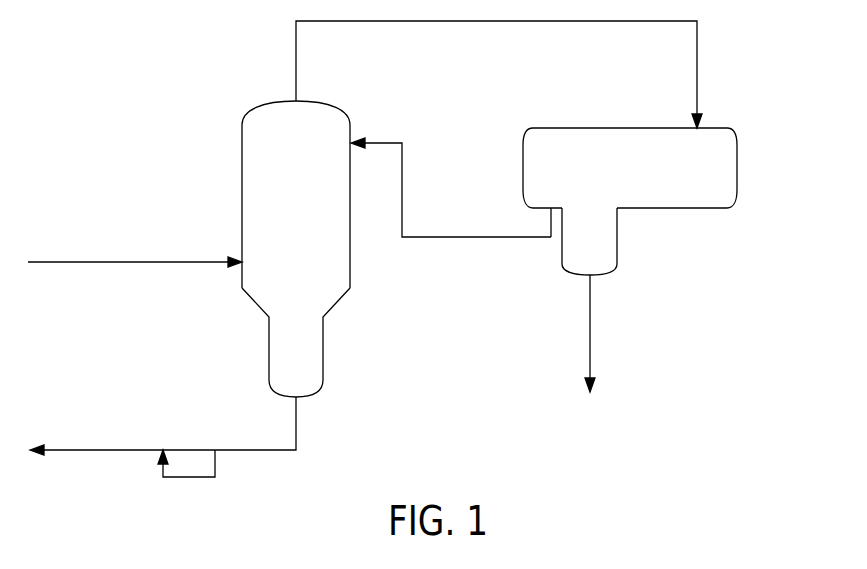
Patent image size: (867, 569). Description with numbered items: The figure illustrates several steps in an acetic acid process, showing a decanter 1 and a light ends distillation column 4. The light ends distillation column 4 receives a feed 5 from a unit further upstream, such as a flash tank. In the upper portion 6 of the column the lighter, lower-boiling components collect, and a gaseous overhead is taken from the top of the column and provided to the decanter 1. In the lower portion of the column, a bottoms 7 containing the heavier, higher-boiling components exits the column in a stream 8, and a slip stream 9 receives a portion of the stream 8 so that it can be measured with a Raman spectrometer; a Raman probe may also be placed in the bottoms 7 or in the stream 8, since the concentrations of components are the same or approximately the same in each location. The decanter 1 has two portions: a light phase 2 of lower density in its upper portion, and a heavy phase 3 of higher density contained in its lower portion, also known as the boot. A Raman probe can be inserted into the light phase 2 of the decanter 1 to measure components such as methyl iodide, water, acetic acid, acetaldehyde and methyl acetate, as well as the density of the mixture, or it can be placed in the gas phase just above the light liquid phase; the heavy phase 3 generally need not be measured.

The decanter 1 is at (625, 235).
The light phase 2 is at (540, 158).
The heavy phase 3 is at (596, 223).
The light ends distillation column 4 is at (275, 231).
The feed 5 is at (80, 262).
The upper portion 6 is at (268, 148).
The bottoms 7 is at (283, 342).
The stream 8 is at (98, 449).
The slip stream 9 is at (192, 480).